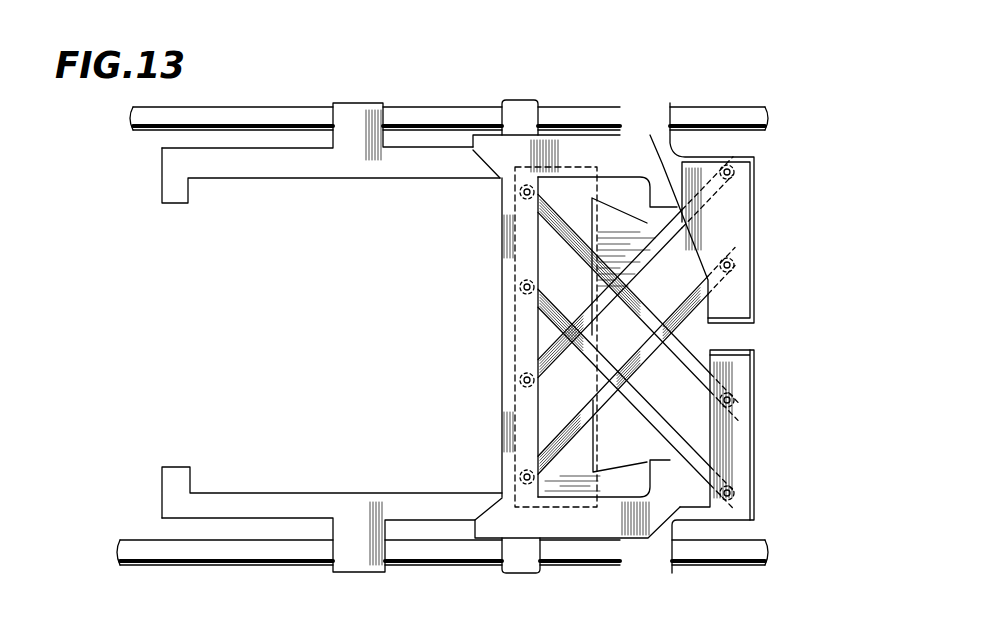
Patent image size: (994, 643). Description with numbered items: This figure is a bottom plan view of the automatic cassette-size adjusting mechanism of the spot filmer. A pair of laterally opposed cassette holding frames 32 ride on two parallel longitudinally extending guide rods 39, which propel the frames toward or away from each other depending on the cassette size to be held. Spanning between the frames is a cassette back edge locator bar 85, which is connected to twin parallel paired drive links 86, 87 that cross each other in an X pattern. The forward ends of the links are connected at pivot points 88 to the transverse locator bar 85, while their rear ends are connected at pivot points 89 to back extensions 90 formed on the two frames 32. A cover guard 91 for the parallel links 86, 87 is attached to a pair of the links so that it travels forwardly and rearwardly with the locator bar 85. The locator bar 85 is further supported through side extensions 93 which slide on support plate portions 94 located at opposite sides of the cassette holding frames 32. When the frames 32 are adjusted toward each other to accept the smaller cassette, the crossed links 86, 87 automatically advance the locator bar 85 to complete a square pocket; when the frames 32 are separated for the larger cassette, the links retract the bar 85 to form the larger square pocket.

The half tray 32 is at (359, 173).
The guide rod 39 is at (448, 104).
The cassette back edge locator bar 85 is at (503, 270).
The drive link 86 is at (660, 428).
The drive link 87 is at (692, 298).
The forward link connection 88 is at (519, 192).
The rear link connection 89 is at (735, 168).
The back extension 90 is at (748, 214).
The cover guard 91 is at (627, 428).
The side extension 93 is at (525, 103).
The support plate portion 94 is at (580, 150).